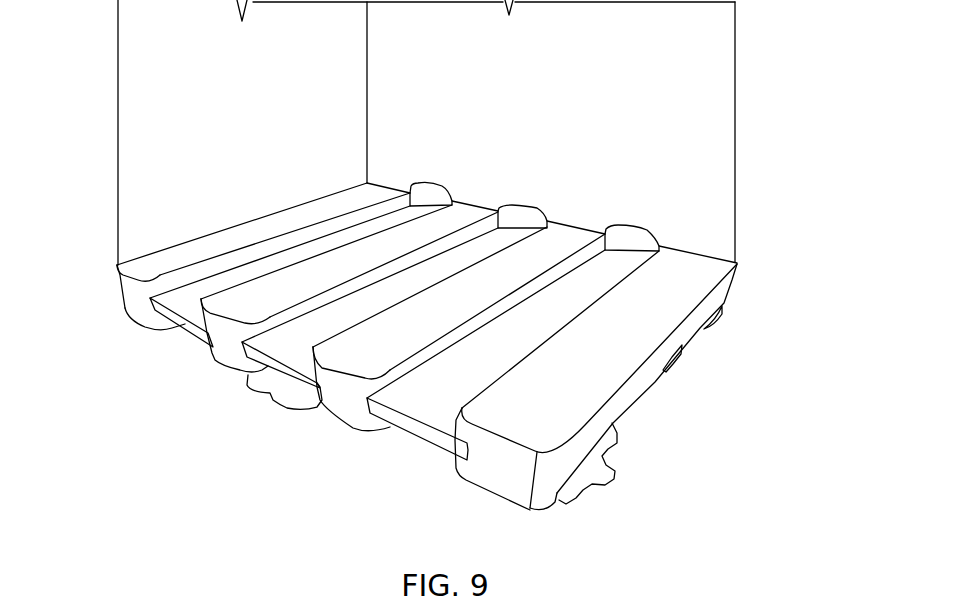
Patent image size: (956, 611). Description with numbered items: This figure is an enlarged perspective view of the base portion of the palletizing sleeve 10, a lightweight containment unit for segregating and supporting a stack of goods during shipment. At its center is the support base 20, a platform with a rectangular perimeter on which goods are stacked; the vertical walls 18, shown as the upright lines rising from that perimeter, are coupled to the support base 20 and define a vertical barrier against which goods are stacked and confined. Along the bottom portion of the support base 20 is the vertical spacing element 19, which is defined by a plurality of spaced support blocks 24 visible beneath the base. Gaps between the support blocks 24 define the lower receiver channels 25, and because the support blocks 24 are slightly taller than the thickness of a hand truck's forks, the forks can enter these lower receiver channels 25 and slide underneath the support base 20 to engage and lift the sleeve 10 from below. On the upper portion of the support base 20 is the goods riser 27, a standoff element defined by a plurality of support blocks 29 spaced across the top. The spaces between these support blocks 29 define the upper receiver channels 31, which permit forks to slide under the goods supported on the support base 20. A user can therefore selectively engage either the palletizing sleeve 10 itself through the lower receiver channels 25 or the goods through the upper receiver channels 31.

The palletizing sleeve 10 is at (788, 140).
The vertical walls 18 is at (148, 133).
The vertical spacing element 19 is at (282, 465).
The support base 20 is at (120, 283).
The support blocks 24 is at (225, 355).
The lower receiver channels 25 is at (280, 398).
The goods riser 27 is at (307, 182).
The support blocks 29 is at (427, 303).
The upper receiver channels 31 is at (430, 184).